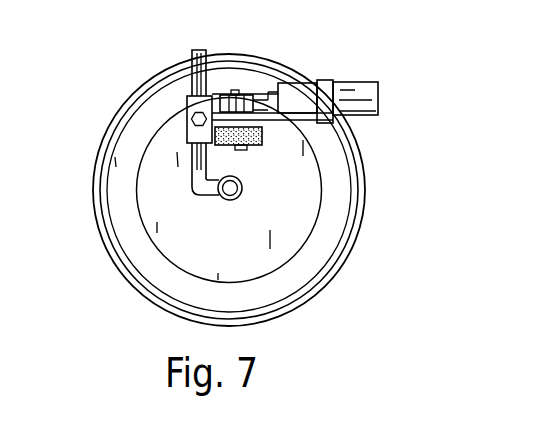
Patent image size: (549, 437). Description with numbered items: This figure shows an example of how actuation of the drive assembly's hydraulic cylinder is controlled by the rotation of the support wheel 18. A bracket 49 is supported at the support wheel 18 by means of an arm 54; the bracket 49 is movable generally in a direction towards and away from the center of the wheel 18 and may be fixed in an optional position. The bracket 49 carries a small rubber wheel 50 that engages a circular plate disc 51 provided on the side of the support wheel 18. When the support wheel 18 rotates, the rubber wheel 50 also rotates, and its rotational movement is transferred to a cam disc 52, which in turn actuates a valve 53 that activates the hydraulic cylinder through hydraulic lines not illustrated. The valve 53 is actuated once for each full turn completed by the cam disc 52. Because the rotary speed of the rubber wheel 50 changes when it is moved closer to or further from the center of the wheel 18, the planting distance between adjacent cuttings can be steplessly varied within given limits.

The support wheel 18 is at (135, 113).
The bracket 49 is at (188, 101).
The rubber wheel 50 is at (250, 145).
The circular plate disc 51 is at (160, 210).
The cam disc 52 is at (231, 95).
The valve 53 is at (362, 90).
The arm 54 is at (199, 164).